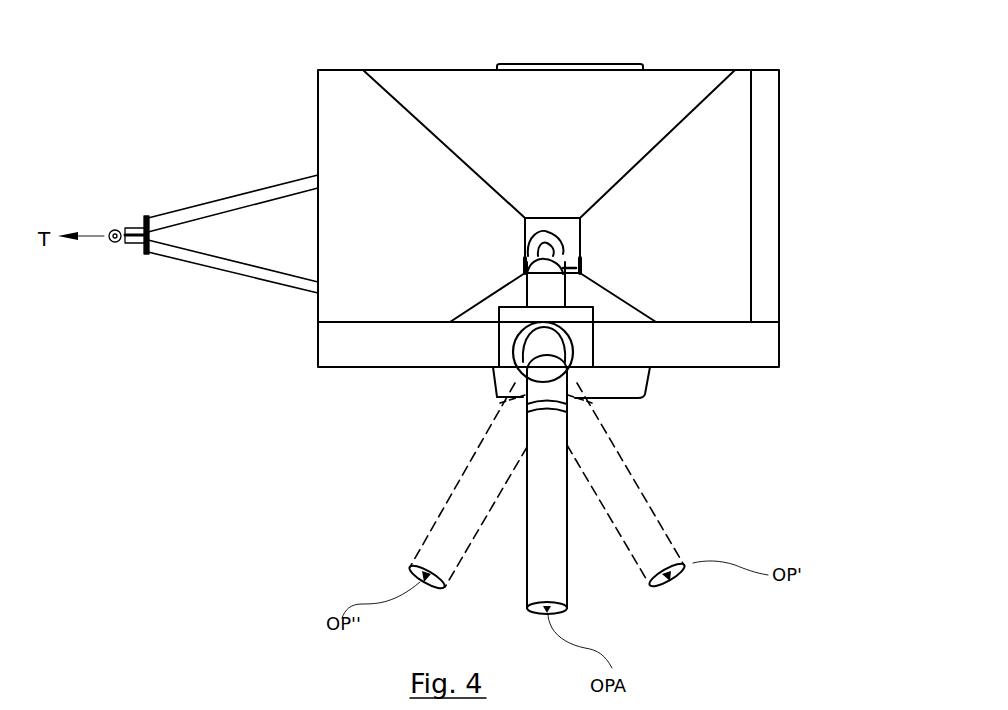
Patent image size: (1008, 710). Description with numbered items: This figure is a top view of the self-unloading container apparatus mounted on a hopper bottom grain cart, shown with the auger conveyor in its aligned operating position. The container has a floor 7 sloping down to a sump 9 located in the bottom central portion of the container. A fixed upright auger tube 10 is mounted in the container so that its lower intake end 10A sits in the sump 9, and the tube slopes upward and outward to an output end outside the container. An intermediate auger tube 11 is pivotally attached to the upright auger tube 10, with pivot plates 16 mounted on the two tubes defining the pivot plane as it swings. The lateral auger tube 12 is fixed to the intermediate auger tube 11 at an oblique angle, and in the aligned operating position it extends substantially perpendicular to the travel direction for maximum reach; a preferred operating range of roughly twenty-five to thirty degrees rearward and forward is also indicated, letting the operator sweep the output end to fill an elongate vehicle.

The floor 7 is at (565, 180).
The sump 9 is at (572, 238).
The lower intake end 10A is at (565, 257).
The upright auger tube 10 is at (560, 293).
The intermediate auger tube 11 is at (535, 350).
The pivot plates 16 is at (570, 343).
The lateral auger tube 12 is at (572, 567).